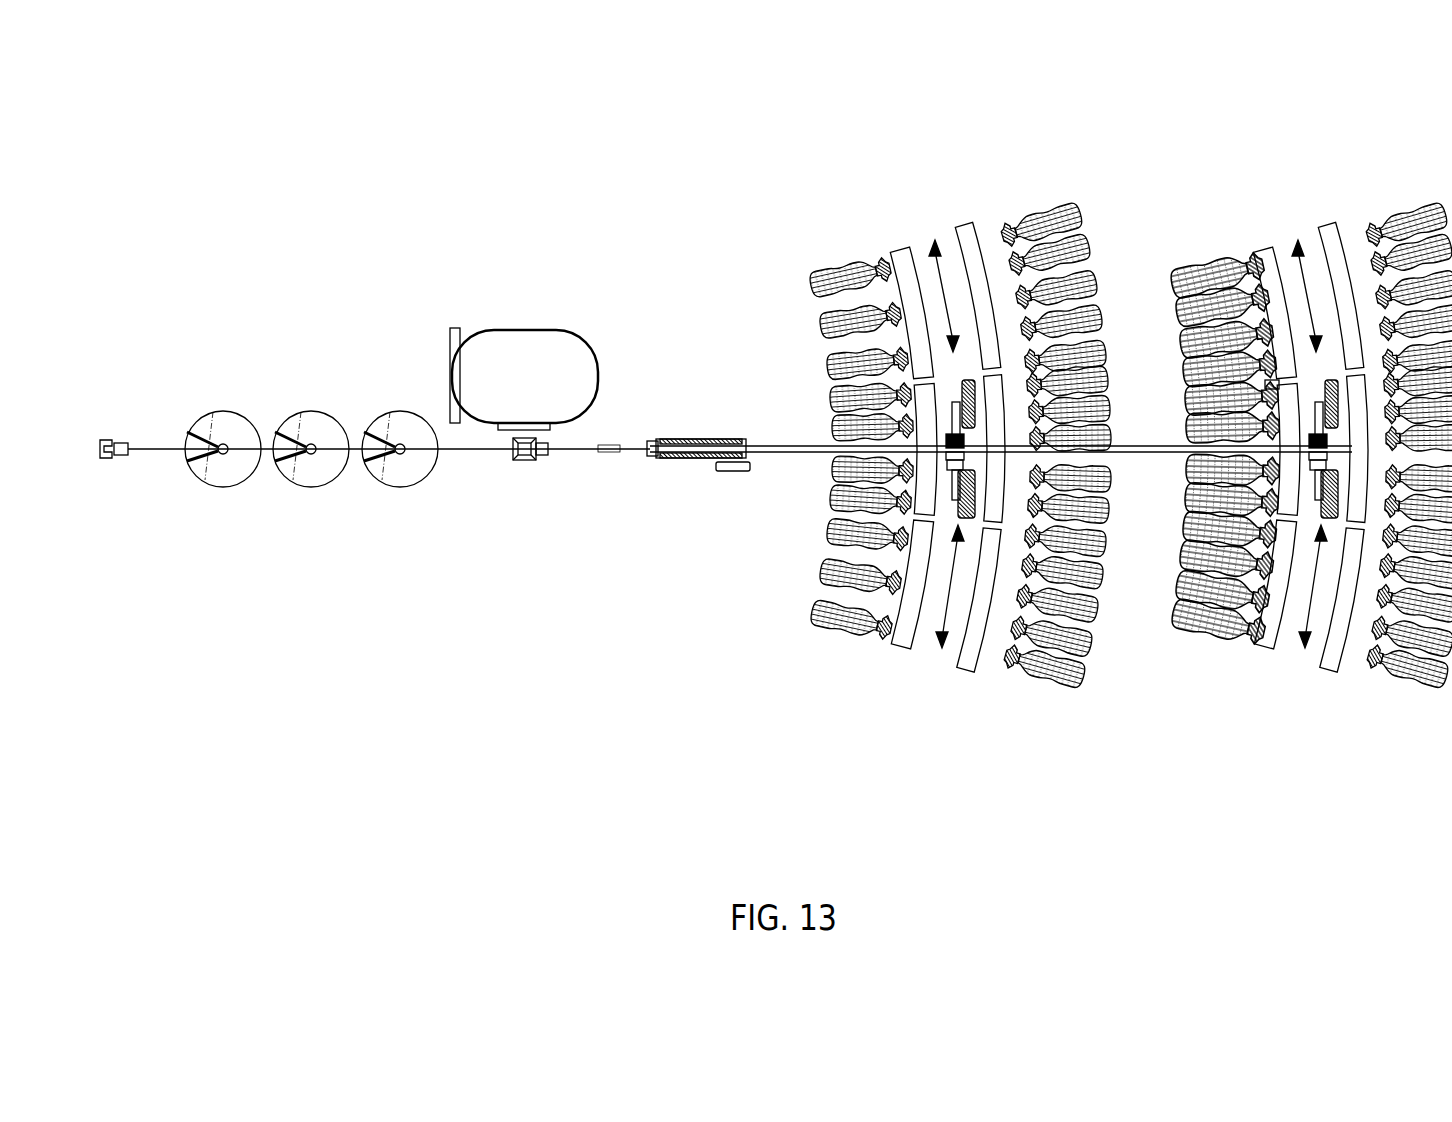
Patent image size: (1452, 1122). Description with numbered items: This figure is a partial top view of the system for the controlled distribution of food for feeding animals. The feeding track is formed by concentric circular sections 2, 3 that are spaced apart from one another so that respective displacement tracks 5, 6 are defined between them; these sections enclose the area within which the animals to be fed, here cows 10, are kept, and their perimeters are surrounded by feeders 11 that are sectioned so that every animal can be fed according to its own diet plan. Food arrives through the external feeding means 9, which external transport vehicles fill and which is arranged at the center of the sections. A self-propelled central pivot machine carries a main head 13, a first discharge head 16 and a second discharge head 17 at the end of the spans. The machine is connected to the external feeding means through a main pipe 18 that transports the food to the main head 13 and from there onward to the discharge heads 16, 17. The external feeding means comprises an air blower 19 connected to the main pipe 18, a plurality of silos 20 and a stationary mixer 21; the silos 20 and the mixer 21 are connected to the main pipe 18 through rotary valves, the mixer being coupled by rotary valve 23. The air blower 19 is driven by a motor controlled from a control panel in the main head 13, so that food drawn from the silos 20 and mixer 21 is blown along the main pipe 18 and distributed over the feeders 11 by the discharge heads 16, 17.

The circular section 2 is at (1008, 164).
The circular section 3 is at (1400, 178).
The displacement track 5 is at (931, 206).
The displacement track 6 is at (1292, 203).
The external feeding means 9 is at (526, 218).
The cows 10 is at (803, 229).
The feeders 11 is at (984, 620).
The main head 13 is at (715, 493).
The first discharge head 16 is at (950, 505).
The second discharge head 17 is at (1313, 505).
The main pipe 18 is at (606, 442).
The air blower 19 is at (118, 420).
The silos 20 is at (400, 412).
The stationary mixer 21 is at (485, 308).
The rotary valve 23 is at (503, 478).